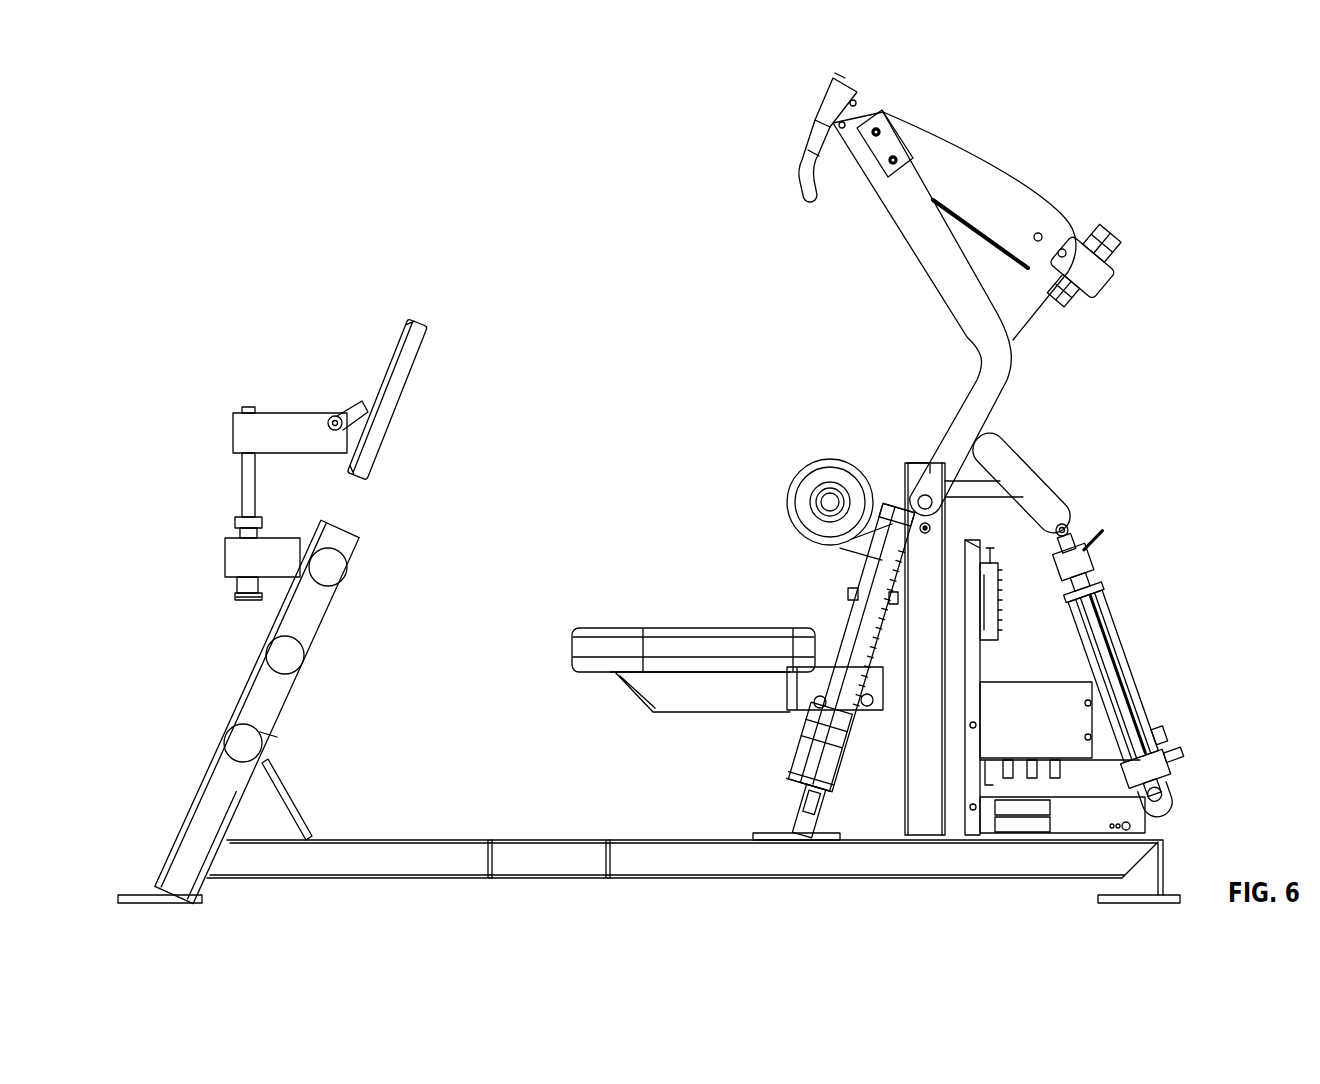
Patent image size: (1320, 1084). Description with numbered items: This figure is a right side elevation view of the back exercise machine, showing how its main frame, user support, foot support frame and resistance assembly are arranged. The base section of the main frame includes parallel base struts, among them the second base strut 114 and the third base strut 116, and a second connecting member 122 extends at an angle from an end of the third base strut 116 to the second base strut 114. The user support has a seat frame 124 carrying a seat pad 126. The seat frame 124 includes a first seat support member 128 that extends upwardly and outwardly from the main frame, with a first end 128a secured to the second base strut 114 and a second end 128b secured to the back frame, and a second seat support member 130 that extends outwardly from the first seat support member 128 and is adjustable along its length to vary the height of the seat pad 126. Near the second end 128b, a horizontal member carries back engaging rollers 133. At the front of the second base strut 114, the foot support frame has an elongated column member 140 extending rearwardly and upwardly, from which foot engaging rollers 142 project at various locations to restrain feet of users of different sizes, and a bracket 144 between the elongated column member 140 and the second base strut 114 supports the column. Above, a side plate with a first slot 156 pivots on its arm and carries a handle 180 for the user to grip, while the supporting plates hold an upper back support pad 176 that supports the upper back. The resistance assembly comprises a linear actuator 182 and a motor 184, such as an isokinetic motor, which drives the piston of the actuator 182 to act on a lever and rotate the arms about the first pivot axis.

The second base strut 114 is at (405, 862).
The third base strut 116 is at (672, 862).
The second connecting member 122 is at (531, 862).
The seat frame 124 is at (808, 738).
The seat pad 126 is at (700, 634).
The first seat support member 128 is at (868, 612).
The first end of first seat support member 128a is at (812, 826).
The second end of first seat support member 128b is at (893, 508).
The second seat support member 130 is at (712, 704).
The back engaging rollers 133 is at (788, 502).
The elongated column member 140 is at (186, 843).
The foot engaging rollers 142 is at (332, 573).
The bracket 144 is at (300, 812).
The first slot 156 is at (908, 148).
The upper back support pad 176 is at (1113, 252).
The handle 180 is at (800, 183).
The linear actuator 182 is at (1123, 668).
The motor 184 is at (1062, 684).